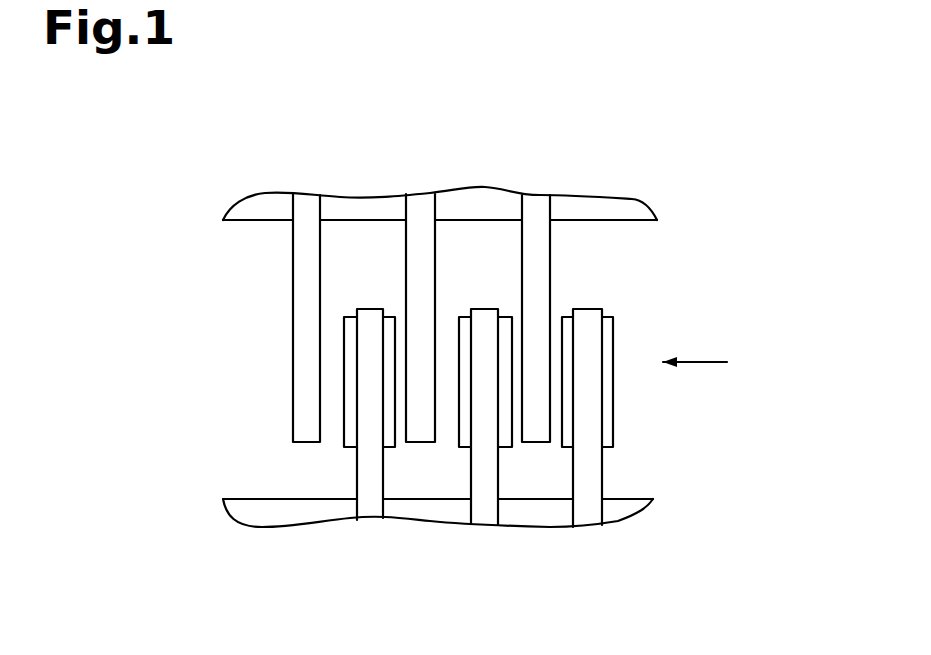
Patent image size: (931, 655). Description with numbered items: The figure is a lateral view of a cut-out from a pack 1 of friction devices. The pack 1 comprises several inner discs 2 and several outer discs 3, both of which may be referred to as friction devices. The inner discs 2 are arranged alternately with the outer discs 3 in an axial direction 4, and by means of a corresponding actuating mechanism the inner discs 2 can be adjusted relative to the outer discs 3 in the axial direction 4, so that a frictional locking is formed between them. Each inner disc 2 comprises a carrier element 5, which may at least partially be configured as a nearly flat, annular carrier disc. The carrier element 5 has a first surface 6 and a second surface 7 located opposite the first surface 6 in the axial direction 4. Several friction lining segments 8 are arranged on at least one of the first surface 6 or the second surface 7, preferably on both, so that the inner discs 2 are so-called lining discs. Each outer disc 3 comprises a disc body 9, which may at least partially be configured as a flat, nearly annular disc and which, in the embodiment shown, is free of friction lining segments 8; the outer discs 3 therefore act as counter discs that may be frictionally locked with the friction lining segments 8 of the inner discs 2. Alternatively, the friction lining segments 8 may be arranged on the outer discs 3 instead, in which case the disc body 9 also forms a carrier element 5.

The pack of friction devices 1 is at (778, 122).
The inner disc 2 is at (615, 483).
The outer disc 3 is at (547, 210).
The axial direction 4 is at (709, 362).
The carrier element 5 is at (350, 462).
The first surface 6 is at (386, 347).
The second surface 7 is at (357, 347).
The friction lining segment 8 is at (395, 457).
The disc body 9 is at (535, 462).